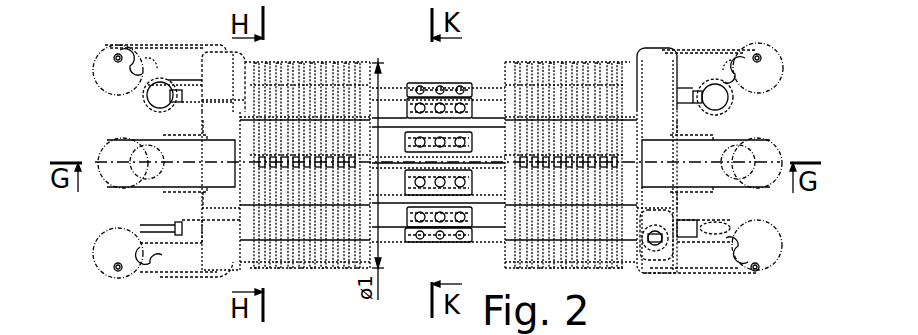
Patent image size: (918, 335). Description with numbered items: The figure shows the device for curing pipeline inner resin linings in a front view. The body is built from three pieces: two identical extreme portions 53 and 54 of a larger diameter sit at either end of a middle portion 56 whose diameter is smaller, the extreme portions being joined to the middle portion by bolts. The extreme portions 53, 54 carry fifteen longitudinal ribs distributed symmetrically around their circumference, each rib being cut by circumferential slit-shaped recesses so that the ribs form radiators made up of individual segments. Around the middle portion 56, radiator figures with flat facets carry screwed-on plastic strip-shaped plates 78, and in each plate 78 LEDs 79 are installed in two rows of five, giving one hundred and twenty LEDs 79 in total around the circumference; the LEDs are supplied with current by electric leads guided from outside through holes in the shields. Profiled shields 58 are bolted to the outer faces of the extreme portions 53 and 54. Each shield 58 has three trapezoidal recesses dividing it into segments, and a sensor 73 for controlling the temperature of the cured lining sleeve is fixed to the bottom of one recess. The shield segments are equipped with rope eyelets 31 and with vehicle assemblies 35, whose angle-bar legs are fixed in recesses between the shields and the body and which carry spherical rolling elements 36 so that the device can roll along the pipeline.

The rope eyelet 31 is at (186, 95).
The vehicle assembly 35 is at (130, 160).
The spherical rolling element 36 is at (757, 88).
The extreme portion 53 is at (244, 80).
The extreme portion 54 is at (509, 82).
The middle portion 56 is at (437, 120).
The profiled shield 58 is at (215, 80).
The sensor 73 is at (658, 243).
The plastic strip-shaped plate 78 is at (412, 230).
The LED 79 is at (437, 228).